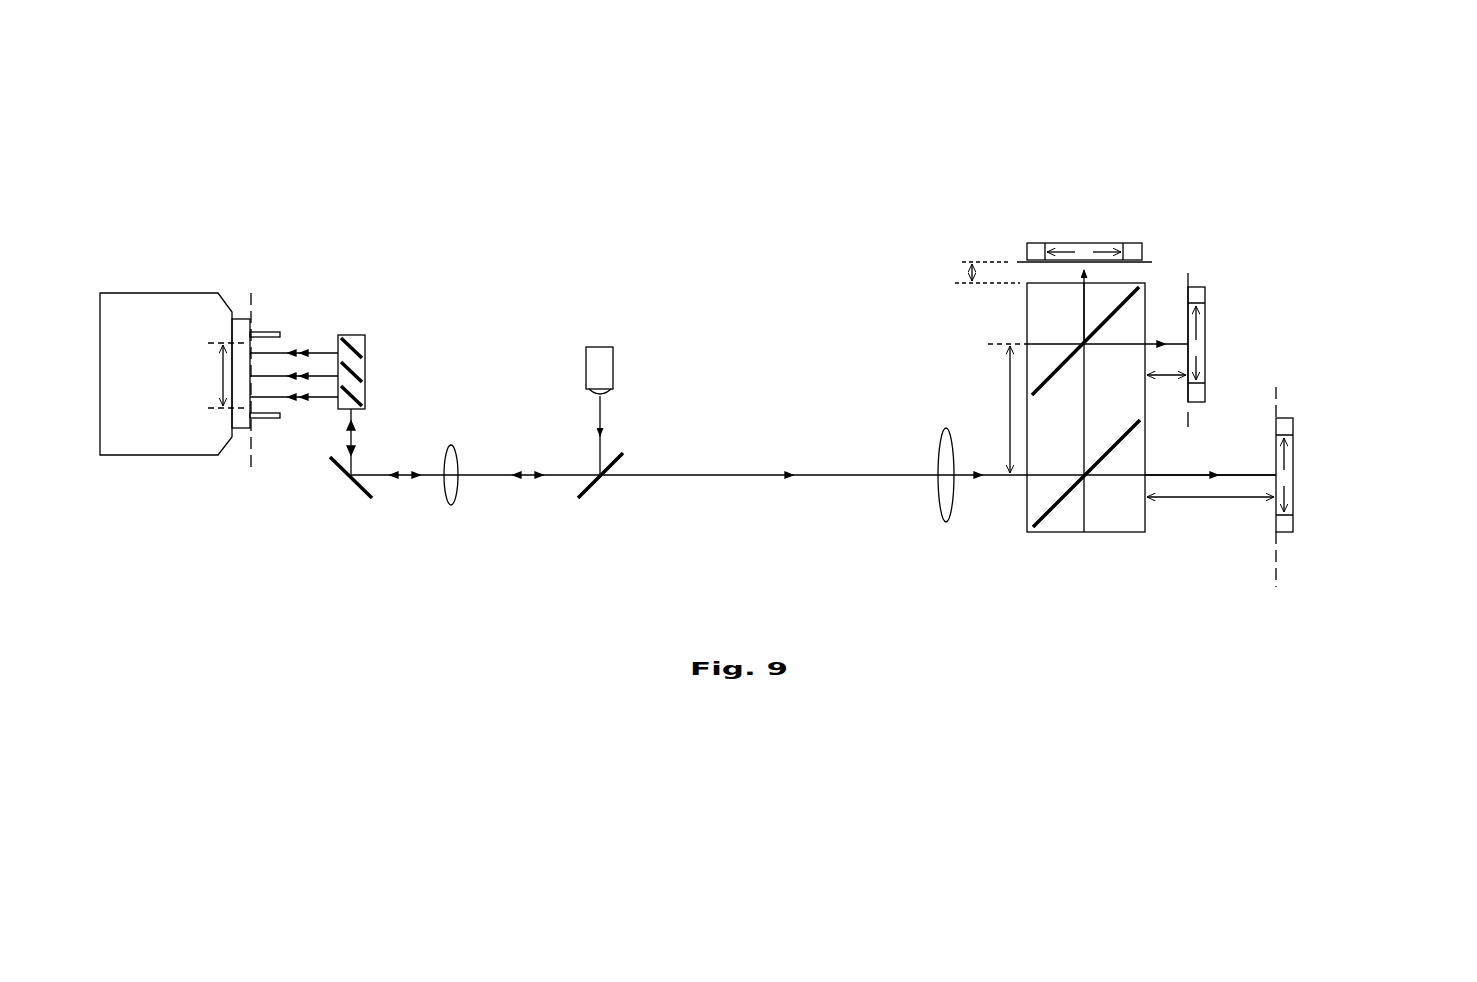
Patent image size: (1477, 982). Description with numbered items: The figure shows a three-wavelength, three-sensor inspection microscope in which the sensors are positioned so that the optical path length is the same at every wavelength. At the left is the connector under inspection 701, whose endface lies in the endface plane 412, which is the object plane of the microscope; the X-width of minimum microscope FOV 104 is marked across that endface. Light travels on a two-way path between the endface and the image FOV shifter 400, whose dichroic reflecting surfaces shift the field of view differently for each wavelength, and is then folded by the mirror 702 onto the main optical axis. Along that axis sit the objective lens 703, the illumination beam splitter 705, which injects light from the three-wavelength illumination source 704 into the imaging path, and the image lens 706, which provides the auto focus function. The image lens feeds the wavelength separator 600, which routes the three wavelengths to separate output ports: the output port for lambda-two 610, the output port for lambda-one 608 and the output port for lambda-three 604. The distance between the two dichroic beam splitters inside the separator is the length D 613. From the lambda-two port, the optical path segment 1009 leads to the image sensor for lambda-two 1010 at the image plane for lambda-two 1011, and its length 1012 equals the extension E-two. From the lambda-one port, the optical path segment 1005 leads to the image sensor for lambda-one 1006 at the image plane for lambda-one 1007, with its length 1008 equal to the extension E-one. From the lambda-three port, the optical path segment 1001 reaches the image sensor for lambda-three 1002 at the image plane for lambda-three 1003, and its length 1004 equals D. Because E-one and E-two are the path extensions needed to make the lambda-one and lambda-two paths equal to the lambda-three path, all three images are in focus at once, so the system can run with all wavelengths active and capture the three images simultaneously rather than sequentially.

The connector under inspection 701 is at (158, 291).
The X-width of minimum microscope FOV 104 is at (218, 376).
The endface plane 412 is at (252, 482).
The image FOV shifter 400 is at (354, 328).
The mirror 702 is at (346, 481).
The objective lens 703 is at (452, 445).
The three-wavelength illumination source 704 is at (599, 339).
The illumination beam splitter 705 is at (603, 488).
The image lens 706 is at (939, 524).
The length of optical path 605 613 is at (1002, 396).
The wavelength separator component 600 is at (1088, 540).
The output port for λ2 610 is at (1082, 288).
The output port for λ1 608 is at (1142, 352).
The output port for λ3 604 is at (1086, 473).
The optical path segment 1009 is at (1034, 302).
The image sensor for λ2 1010 is at (1083, 241).
The image plane for λ2 1011 is at (1162, 262).
The length of optical path segment 1012 is at (955, 272).
The optical path segment 1005 is at (1107, 316).
The image plane for λ1 1007 is at (1188, 273).
The image sensor for λ1 1006 is at (1215, 345).
The length of optical path 1008 is at (1165, 385).
The optical path segment 1001 is at (1210, 447).
The length of optical path 1004 is at (1213, 507).
The image plane for λ3 1003 is at (1276, 587).
The image sensor for λ3 1002 is at (1302, 476).